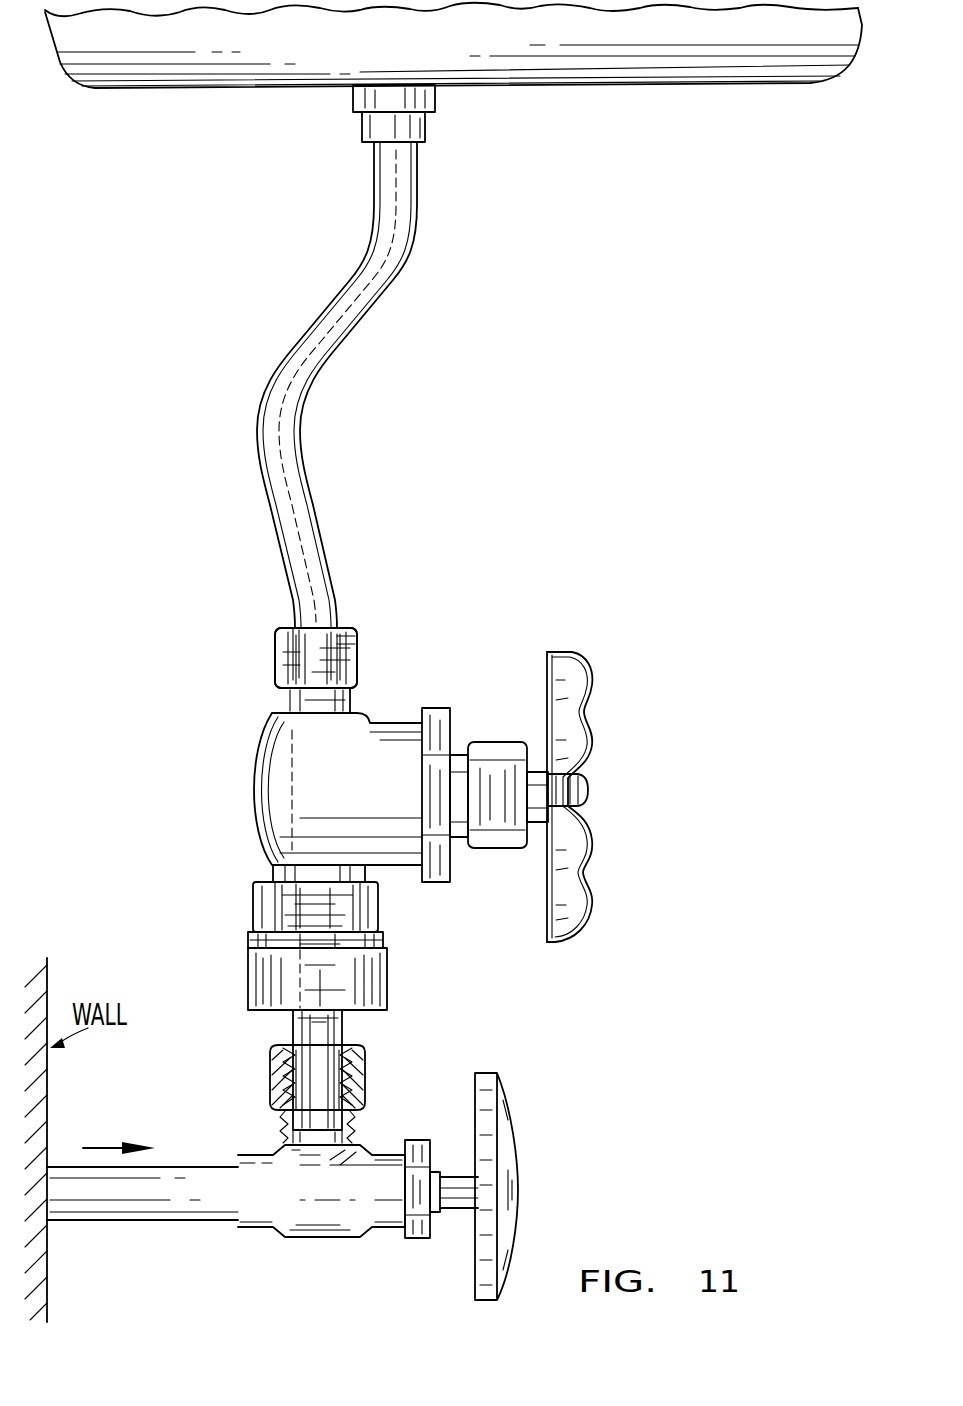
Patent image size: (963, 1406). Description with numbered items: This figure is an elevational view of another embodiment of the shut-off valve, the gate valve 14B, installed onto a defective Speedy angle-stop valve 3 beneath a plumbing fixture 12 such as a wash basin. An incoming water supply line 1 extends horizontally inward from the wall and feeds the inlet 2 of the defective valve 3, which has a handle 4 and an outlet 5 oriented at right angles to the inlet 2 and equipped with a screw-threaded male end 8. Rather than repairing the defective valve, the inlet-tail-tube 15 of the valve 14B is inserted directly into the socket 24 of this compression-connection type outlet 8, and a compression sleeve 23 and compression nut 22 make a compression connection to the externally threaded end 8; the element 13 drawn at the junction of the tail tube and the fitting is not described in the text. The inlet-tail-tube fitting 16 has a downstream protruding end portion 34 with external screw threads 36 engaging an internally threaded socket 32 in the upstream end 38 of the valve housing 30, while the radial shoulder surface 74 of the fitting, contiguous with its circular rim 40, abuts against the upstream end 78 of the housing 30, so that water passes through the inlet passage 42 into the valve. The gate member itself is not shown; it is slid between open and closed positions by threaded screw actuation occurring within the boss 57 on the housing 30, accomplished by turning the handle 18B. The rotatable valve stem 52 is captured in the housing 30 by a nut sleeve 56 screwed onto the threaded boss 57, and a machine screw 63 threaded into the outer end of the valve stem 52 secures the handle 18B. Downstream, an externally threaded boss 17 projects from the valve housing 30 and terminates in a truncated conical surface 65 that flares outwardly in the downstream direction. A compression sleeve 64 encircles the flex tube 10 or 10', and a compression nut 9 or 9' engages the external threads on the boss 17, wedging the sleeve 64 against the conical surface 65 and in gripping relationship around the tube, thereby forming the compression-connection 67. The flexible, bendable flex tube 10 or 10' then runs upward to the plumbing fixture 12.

The incoming water supply line 1 is at (155, 1203).
The inlet 2 is at (250, 1197).
The angle-stop shut-off valve 3 is at (314, 1246).
The handle 4 is at (508, 1142).
The outlet 5 is at (344, 1157).
The screw-threaded male end 8 is at (366, 1092).
The compression nut 9 is at (253, 658).
The compression nut 9' is at (316, 658).
The flex tube line 10 is at (353, 384).
The flex tube 10' is at (337, 386).
The plumbing fixture 12 is at (652, 92).
The stem 13 is at (295, 1015).
The valve 14B is at (242, 792).
The inlet-tail-tube 15 is at (295, 1086).
The inlet-tail-tube fitting 16 is at (400, 982).
The externally threaded boss 17 is at (352, 684).
The handle 18B is at (604, 710).
The compression nut 22 is at (272, 1062).
The compression sleeve 23 is at (364, 1070).
The socket 24 is at (296, 1116).
The valve housing 30 is at (253, 890).
The internally threaded socket 32 is at (298, 882).
The downstream protruding end portion 34 is at (266, 910).
The external screw threads 36 is at (362, 907).
The upstream end 38 is at (290, 986).
The circular rim 40 is at (312, 938).
The inlet passage 42 is at (336, 882).
The valve stem 52 is at (538, 824).
The nut sleeve 56 is at (493, 742).
The boss 57 is at (458, 752).
The machine screw 63 is at (590, 794).
The compression sleeve 64 is at (358, 636).
The truncated conical surface 65 is at (293, 626).
The compression-connection 67 is at (349, 618).
The radial shoulder surface 74 is at (305, 930).
The upstream end 78 is at (322, 940).